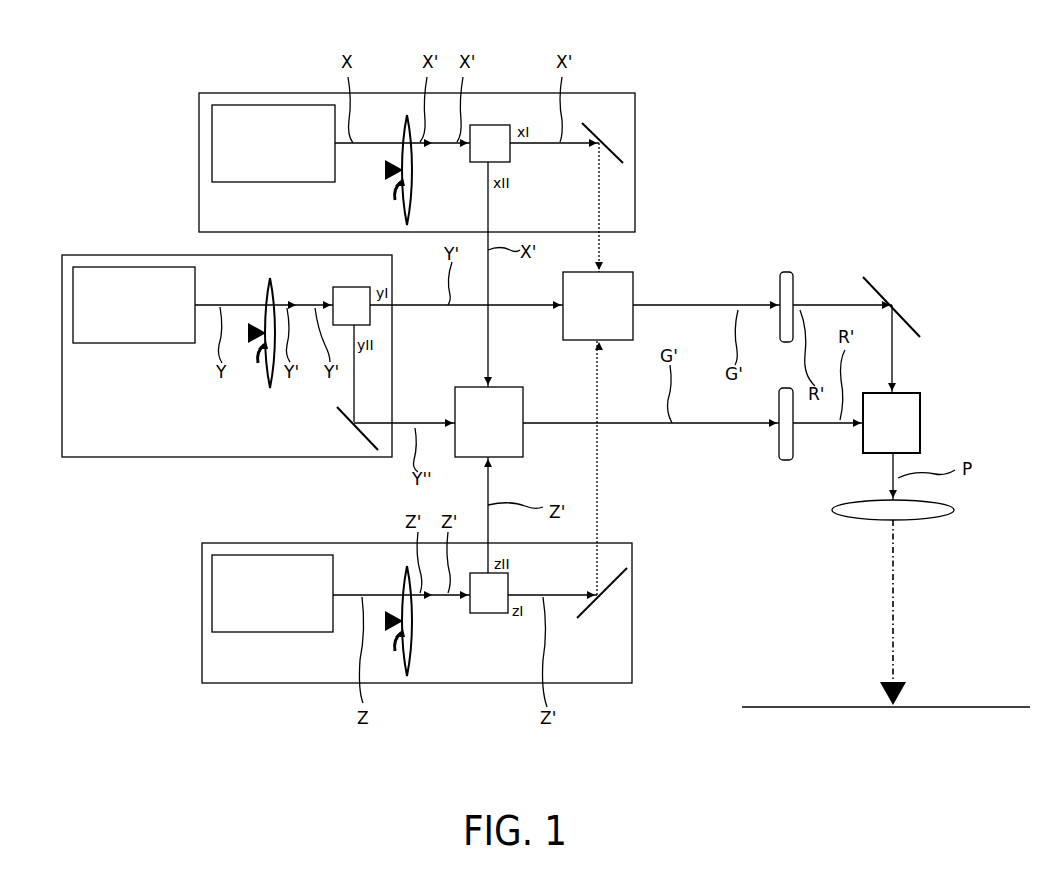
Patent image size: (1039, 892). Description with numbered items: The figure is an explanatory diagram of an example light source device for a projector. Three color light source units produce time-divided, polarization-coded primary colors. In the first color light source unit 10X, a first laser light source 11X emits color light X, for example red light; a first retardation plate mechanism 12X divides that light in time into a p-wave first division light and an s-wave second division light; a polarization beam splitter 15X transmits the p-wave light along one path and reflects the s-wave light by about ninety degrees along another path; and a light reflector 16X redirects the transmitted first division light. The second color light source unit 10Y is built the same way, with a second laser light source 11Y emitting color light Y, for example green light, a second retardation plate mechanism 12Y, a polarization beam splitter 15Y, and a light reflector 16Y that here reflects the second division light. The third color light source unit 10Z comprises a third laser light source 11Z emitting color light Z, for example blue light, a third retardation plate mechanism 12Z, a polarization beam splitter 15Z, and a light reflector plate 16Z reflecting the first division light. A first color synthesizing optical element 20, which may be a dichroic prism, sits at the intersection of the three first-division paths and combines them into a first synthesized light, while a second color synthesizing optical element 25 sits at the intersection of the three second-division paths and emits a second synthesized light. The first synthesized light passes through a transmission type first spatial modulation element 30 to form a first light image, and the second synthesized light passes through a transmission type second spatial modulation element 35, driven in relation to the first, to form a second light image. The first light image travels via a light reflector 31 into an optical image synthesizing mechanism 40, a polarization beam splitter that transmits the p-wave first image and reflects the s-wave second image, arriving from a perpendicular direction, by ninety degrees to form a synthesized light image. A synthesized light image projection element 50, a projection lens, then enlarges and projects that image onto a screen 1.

The screen 1 is at (998, 707).
The first color light source unit 10X is at (290, 93).
The first laser light source 11X is at (232, 105).
The first retardation plate mechanism 12X is at (403, 118).
The polarization beam splitter 15X is at (492, 125).
The light reflector 16X is at (593, 125).
The second color light source unit 10Y is at (100, 255).
The second laser light source 11Y is at (157, 267).
The second retardation plate mechanism 12Y is at (270, 390).
The polarization beam splitter 15Y is at (370, 315).
The light reflector 16Y is at (358, 445).
The third color light source unit 10Z is at (202, 577).
The third laser light source 11Z is at (230, 555).
The third retardation plate mechanism 12Z is at (407, 677).
The polarization beam splitter 15Z is at (488, 613).
The light reflector plate 16Z is at (588, 613).
The first color synthesizing optical element 20 is at (633, 288).
The second color synthesizing optical element 25 is at (523, 400).
The first spatial modulation element 30 is at (785, 270).
The light reflector 31 is at (885, 285).
The second spatial modulation element 35 is at (783, 460).
The optical image synthesizing mechanism 40 is at (920, 420).
The synthesized light image projection element 50 is at (862, 520).